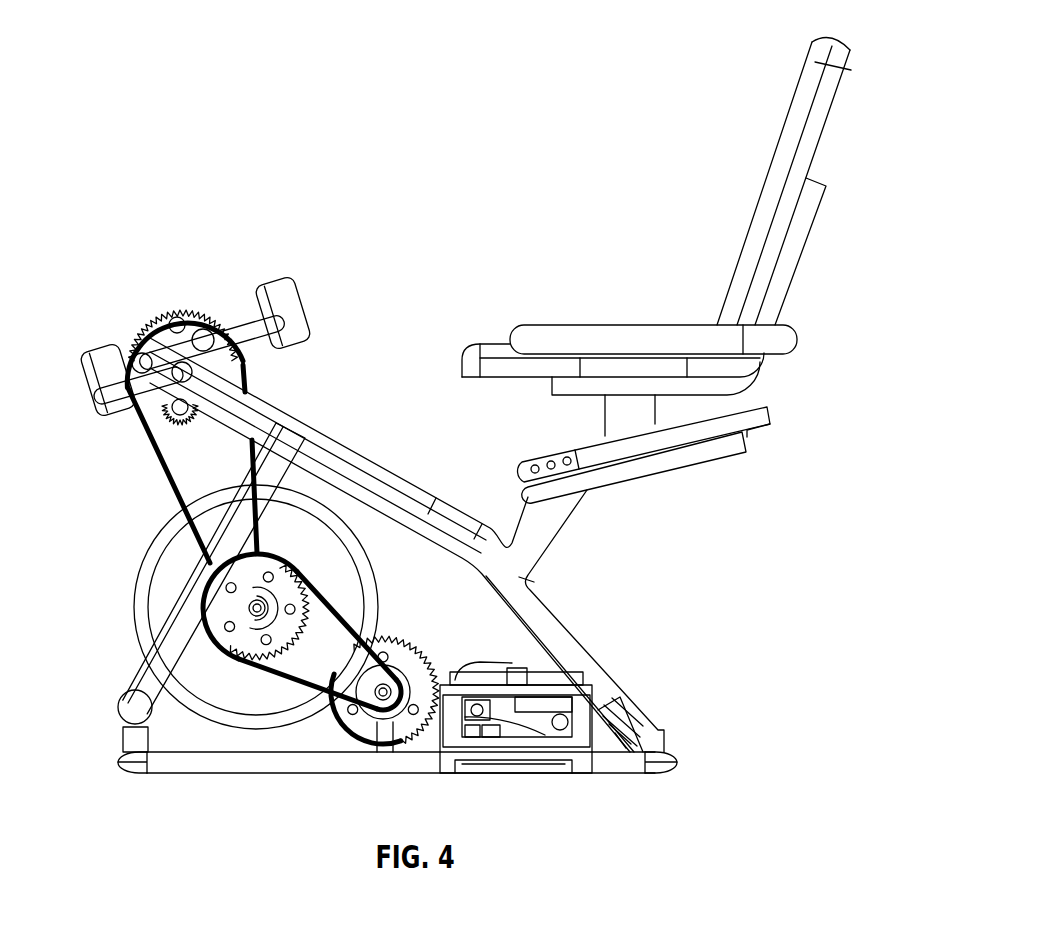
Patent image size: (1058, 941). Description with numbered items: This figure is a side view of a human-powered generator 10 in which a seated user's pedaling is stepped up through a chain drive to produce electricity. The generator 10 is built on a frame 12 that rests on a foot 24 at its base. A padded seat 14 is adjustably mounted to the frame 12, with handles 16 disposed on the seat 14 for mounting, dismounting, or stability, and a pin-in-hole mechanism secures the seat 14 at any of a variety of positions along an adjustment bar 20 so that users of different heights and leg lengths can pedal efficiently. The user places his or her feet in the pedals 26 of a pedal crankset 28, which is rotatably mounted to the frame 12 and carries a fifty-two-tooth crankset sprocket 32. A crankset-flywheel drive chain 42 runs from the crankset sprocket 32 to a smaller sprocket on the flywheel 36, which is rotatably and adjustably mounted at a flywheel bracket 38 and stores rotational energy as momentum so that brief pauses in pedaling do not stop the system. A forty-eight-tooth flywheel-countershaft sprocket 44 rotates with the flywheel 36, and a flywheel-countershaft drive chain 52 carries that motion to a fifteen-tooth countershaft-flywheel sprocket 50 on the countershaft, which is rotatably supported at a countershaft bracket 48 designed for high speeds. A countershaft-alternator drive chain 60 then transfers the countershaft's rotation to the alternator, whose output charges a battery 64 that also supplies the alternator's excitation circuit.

The human-powered generator 10 is at (176, 150).
The frame 12 is at (340, 467).
The seat 14 is at (793, 132).
The handles 16 is at (643, 333).
The adjustment bar 20 is at (521, 468).
The foot 24 is at (117, 765).
The pedals 26 is at (312, 320).
The pedal crankset 28 is at (246, 331).
The crankset sprocket 32 is at (150, 336).
The flywheel 36 is at (172, 568).
The flywheel bracket 38 is at (152, 652).
The crankset-flywheel drive chain 42 is at (168, 470).
The flywheel-countershaft sprocket 44 is at (196, 725).
The countershaft bracket 48 is at (386, 740).
The countershaft-flywheel sprocket 50 is at (362, 740).
The flywheel-countershaft drive chain 52 is at (262, 735).
The countershaft-alternator drive chain 60 is at (343, 613).
The battery 64 is at (526, 756).